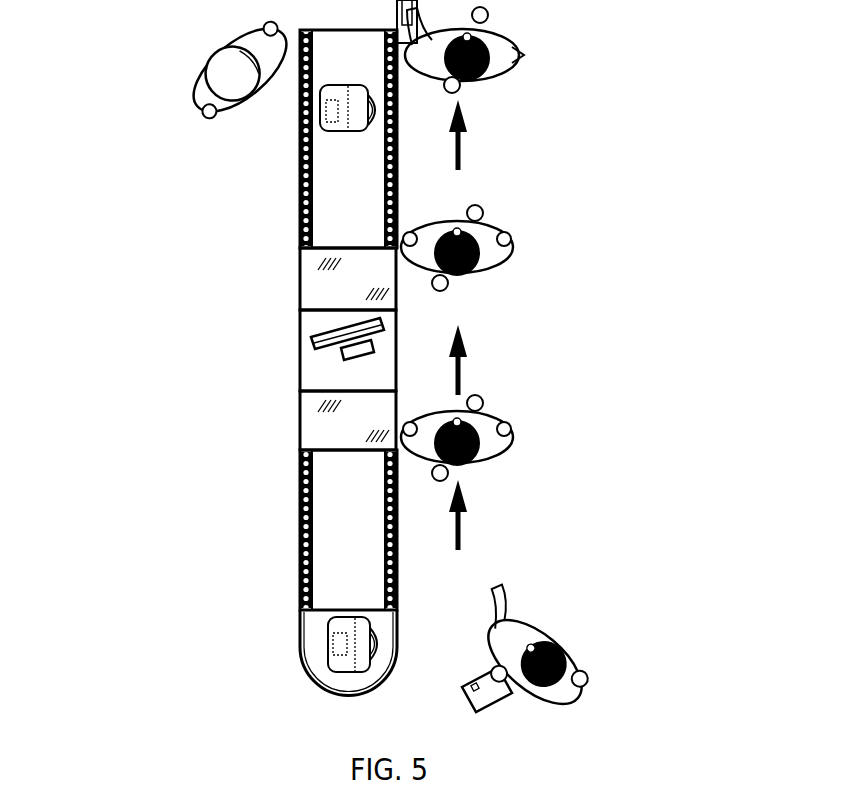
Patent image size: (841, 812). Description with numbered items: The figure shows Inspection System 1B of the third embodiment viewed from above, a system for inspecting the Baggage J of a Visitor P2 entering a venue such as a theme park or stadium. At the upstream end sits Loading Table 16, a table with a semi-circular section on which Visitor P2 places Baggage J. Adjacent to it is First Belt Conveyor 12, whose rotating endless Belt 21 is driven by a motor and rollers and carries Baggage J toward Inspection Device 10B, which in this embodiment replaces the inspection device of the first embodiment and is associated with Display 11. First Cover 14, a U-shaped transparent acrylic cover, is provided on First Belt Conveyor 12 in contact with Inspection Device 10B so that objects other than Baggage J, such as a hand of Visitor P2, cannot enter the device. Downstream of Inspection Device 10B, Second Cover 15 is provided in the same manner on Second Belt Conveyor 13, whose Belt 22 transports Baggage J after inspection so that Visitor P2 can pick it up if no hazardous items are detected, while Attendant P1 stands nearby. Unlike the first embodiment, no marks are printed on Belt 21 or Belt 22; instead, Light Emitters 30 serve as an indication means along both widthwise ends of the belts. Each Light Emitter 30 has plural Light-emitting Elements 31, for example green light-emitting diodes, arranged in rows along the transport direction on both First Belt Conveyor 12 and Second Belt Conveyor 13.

The inspection system 1B is at (635, 92).
The inspection device 10B is at (305, 354).
The display 11 is at (300, 368).
The first belt conveyor 12 is at (279, 524).
The second belt conveyor 13 is at (291, 320).
The first cover 14 is at (300, 425).
The second cover 15 is at (300, 297).
The loading table 16 is at (315, 660).
The belt 21 is at (313, 477).
The belt 22 is at (322, 228).
The light emitter 30 is at (300, 135).
The light-emitting element 31 is at (300, 190).
The baggage J is at (363, 668).
The attendant P1 is at (205, 90).
The visitor P2 is at (512, 48).